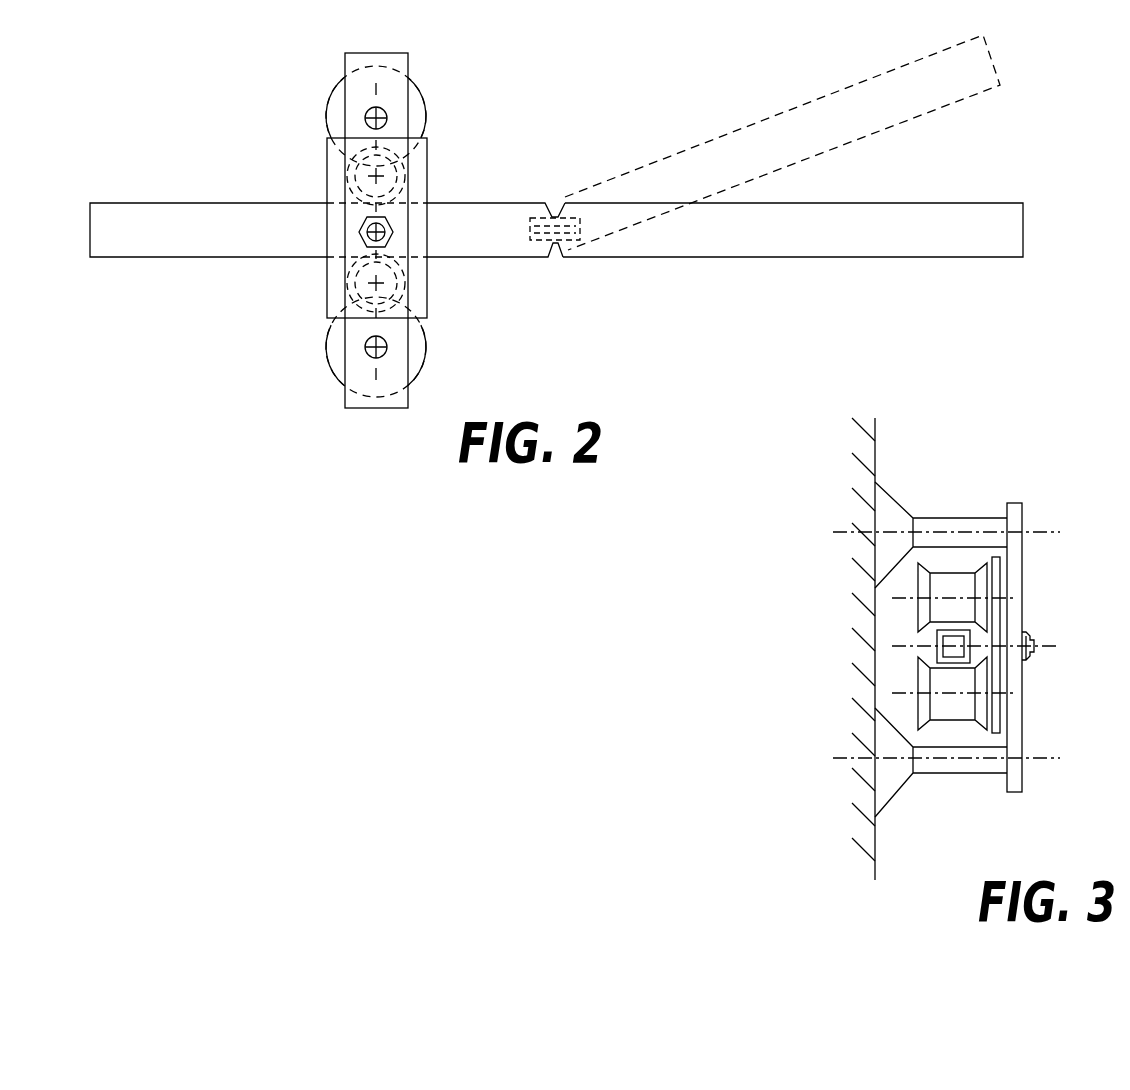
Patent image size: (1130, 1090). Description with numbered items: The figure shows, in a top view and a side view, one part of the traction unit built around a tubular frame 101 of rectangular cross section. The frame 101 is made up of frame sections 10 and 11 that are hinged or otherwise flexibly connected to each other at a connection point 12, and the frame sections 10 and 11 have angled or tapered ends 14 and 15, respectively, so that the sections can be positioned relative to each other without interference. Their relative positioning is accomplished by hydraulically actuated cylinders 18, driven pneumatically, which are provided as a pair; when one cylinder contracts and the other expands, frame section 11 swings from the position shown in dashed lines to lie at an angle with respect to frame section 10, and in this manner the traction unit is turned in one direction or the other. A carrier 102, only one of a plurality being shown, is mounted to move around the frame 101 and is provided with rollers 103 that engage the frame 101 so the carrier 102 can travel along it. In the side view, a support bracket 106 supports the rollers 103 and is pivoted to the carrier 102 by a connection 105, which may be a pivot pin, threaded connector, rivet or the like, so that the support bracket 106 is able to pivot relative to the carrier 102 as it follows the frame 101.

In FIG. 2, the frame section 10 is at (216, 243).
In FIG. 2, the frame section 11 is at (834, 140).
In FIG. 2, the connection point 12 is at (563, 185).
In FIG. 2, the tapered end 14 is at (550, 258).
In FIG. 2, the tapered end 15 is at (563, 258).
In FIG. 2, the hydraulically actuated cylinder 18 is at (510, 233).
In FIG. 2, the frame 101 is at (541, 160).
In FIG. 3, the frame 101 is at (937, 646).
In FIG. 2, the carrier 102 is at (410, 53).
In FIG. 3, the carrier 102 is at (1022, 503).
In FIG. 2, the roller 103 is at (427, 333).
In FIG. 3, the roller 103 is at (958, 563).
In FIG. 2, the connection 105 is at (390, 222).
In FIG. 2, the support bracket 106 is at (327, 166).
In FIG. 3, the support bracket 106 is at (1000, 575).